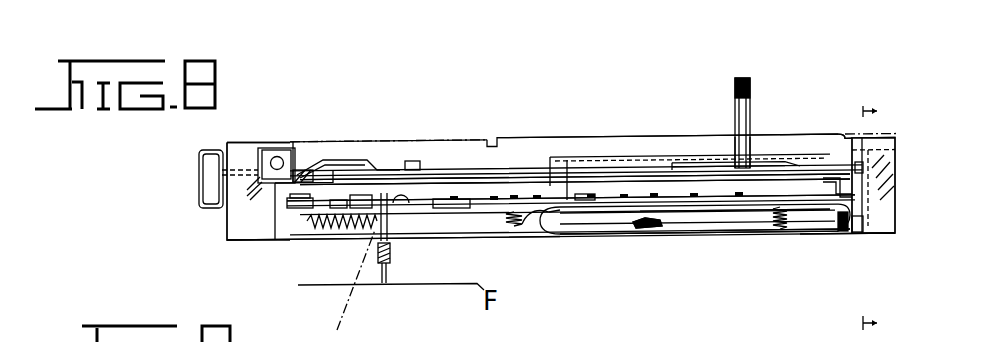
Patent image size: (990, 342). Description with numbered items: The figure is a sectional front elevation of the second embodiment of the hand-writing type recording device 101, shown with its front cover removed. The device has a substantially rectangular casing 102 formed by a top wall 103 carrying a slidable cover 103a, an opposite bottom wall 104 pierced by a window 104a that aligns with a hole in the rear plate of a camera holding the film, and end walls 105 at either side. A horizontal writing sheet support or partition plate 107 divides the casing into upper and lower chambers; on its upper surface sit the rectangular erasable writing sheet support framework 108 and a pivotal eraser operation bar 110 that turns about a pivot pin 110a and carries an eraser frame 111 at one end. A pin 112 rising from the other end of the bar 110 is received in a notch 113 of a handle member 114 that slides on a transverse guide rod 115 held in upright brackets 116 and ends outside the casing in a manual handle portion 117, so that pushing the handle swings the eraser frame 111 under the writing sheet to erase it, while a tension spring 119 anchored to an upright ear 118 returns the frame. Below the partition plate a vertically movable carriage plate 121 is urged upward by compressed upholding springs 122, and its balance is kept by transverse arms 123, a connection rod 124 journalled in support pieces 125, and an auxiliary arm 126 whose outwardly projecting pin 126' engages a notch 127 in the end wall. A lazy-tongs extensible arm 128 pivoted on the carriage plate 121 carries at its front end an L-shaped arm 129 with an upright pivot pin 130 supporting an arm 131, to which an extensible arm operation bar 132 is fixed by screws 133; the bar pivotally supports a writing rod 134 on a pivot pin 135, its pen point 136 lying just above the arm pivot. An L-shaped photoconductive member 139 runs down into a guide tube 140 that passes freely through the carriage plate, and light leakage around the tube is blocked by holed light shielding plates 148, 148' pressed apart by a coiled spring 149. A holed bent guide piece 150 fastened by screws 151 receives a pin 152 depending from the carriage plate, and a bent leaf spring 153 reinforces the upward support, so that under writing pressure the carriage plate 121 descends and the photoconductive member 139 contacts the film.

The hand-writing type recording device 101 is at (208, 237).
The casing 102 is at (233, 216).
The front or top wall 103 is at (402, 141).
The slidable cover 103a is at (838, 135).
The rear or bottom wall 104 is at (604, 235).
The opening or window 104a is at (334, 286).
The end wall 105 is at (240, 158).
The writing sheet support or partition plate 107 is at (583, 192).
The erasable writing sheet support framework 108 is at (806, 140).
The pivotal eraser operation bar 110 is at (372, 167).
The pivot pin 110a is at (470, 173).
The eraser frame 111 is at (542, 172).
The pin 112 is at (346, 138).
The notch 113 is at (343, 162).
The handle member 114 is at (198, 180).
The transverse guide rod 115 is at (278, 157).
The upright bracket 116 is at (294, 142).
The manual handle portion 117 is at (197, 153).
The upright ear 118 is at (428, 172).
The tension spring 119 is at (442, 168).
The carriage plate 121 is at (561, 233).
The upholding spring 122 is at (780, 232).
The transverse arm 123 is at (829, 235).
The connection rod 124 is at (717, 234).
The support piece 125 is at (248, 242).
The auxiliary arm 126 is at (847, 266).
The outwardly projecting pin 126' is at (891, 266).
The notch 127 is at (870, 218).
The extensible arm 128 is at (518, 178).
The L-shaped arm 129 is at (634, 234).
The pivot pin 130 is at (567, 312).
The arm 131 is at (636, 168).
The extensible arm operation bar 132 is at (696, 165).
The screw 133 is at (672, 162).
The writing rod 134 is at (752, 96).
The pivot pin 135 is at (752, 140).
The pen point 136 is at (760, 158).
The photoconductive member 139 is at (389, 272).
The guide tube 140 is at (377, 260).
The light shielding plate 148 is at (338, 249).
The light shielding plate 148' is at (440, 241).
The coiled spring 149 is at (462, 239).
The holed bent guide piece 150 is at (705, 234).
The screw 151 is at (656, 234).
The pin 152 is at (767, 233).
The leaf spring 153 is at (571, 232).